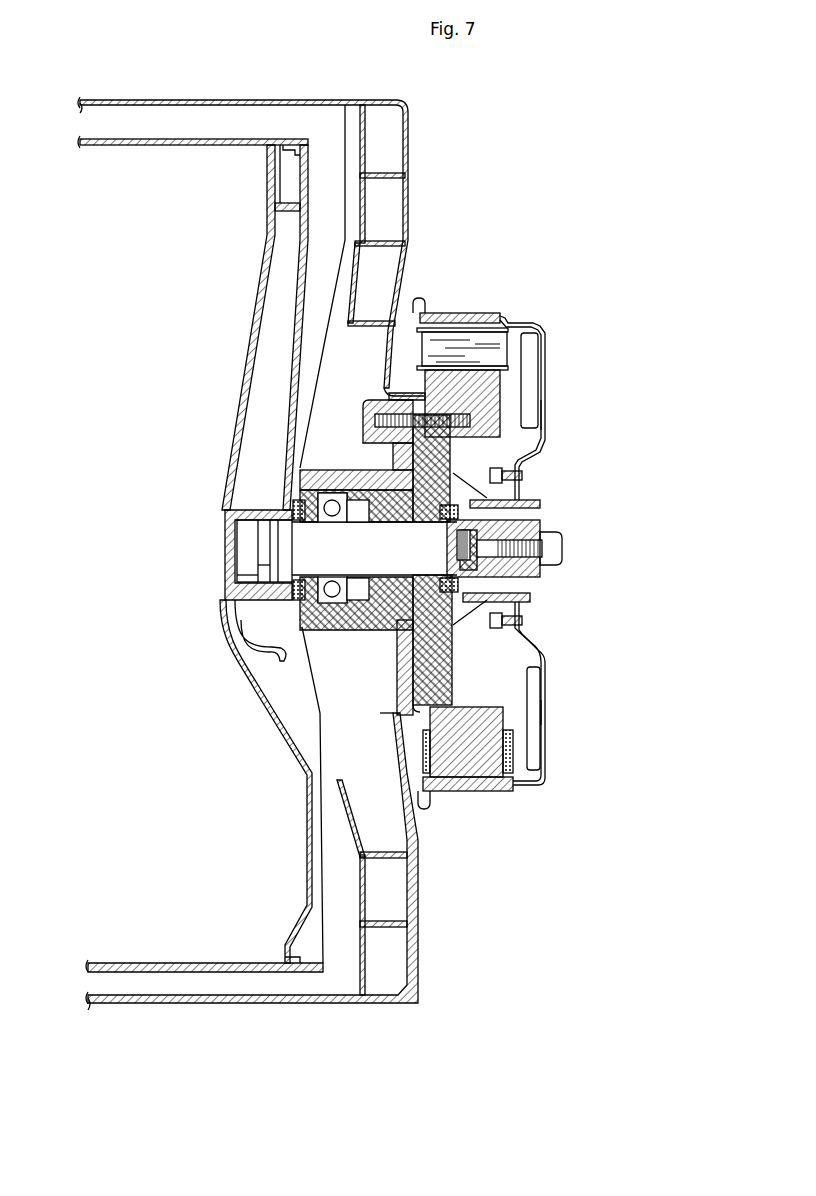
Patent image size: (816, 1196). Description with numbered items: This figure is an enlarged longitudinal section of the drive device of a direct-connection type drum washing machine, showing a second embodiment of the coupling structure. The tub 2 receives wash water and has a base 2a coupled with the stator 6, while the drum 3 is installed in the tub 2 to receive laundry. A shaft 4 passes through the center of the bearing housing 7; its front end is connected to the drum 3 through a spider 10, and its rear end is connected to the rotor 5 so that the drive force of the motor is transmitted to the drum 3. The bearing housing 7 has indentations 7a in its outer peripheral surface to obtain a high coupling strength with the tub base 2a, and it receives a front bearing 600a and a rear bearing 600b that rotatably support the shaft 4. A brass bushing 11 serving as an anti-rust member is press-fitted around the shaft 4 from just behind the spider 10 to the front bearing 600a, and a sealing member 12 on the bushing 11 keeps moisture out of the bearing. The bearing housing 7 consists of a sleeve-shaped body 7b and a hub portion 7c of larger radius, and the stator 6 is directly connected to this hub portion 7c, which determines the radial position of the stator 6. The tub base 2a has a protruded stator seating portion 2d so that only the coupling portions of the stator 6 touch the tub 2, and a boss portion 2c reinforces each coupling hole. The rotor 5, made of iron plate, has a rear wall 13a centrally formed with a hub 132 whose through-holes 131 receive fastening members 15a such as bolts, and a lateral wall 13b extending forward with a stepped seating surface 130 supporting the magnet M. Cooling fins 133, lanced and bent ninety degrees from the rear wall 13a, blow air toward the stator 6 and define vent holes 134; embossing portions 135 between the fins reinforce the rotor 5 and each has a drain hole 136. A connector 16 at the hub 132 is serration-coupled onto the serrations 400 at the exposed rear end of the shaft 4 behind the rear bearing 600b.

The tub 2 is at (174, 98).
The tub base 2a is at (389, 356).
The boss portion 2c is at (367, 420).
The stator seating portion 2d is at (398, 392).
The drum 3 is at (174, 149).
The shaft 4 is at (242, 550).
The rotor 5 is at (546, 366).
The stator 6 is at (500, 350).
The bearing housing 7 is at (453, 462).
The indentations 7a is at (330, 470).
The bearing housing body 7b is at (338, 632).
The bearing housing hub portion 7c is at (452, 658).
The spider 10 is at (223, 596).
The brass bushing 11 is at (310, 522).
The sealing member 12 is at (327, 577).
The rear wall 13a is at (545, 748).
The lateral wall 13b is at (468, 313).
The seating surface 130 is at (503, 314).
The through-holes 131 is at (523, 627).
The hub 132 is at (522, 486).
The cooling fins 133 is at (530, 380).
The vent hole 134 is at (542, 415).
The embossing portions 135 is at (547, 688).
The drain hole 136 is at (547, 714).
The fastening members 15a is at (522, 618).
The connector 16 is at (543, 566).
The serrations 400 is at (562, 547).
The front bearing 600a is at (303, 502).
The rear bearing 600b is at (452, 512).
The magnet M is at (440, 313).